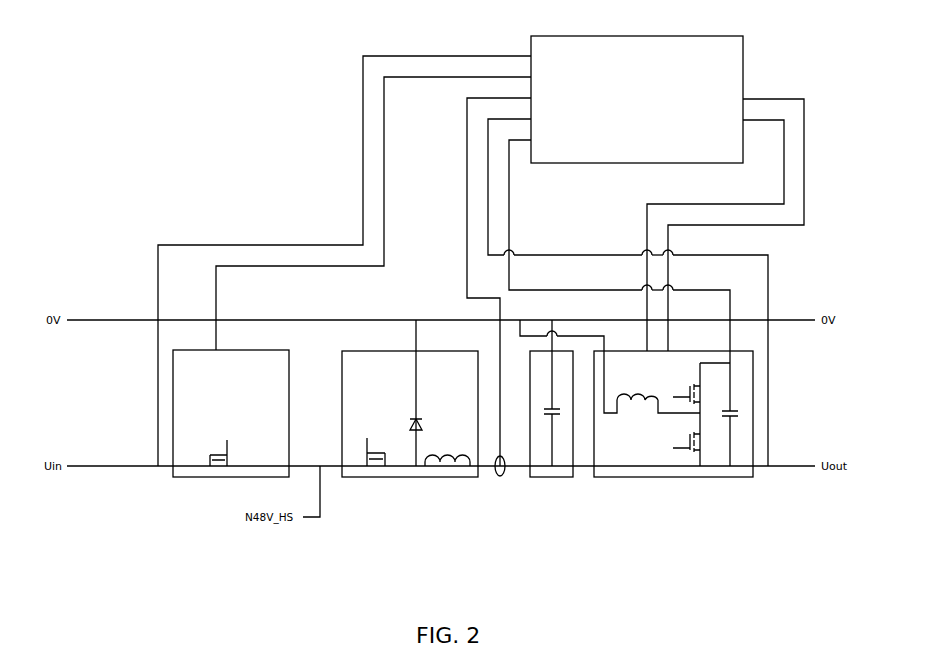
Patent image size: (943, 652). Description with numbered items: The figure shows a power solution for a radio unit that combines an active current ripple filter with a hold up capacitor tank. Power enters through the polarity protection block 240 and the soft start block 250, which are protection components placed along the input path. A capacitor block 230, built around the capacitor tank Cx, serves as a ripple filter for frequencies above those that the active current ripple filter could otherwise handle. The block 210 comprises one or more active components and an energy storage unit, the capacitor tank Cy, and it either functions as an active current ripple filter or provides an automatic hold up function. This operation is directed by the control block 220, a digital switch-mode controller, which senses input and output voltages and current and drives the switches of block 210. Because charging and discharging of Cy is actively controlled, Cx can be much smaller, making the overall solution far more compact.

The block 210 is at (737, 478).
The control block 220 is at (653, 35).
The capacitor block 230 is at (532, 482).
The polarity protection block 240 is at (175, 478).
The soft start block 250 is at (440, 482).